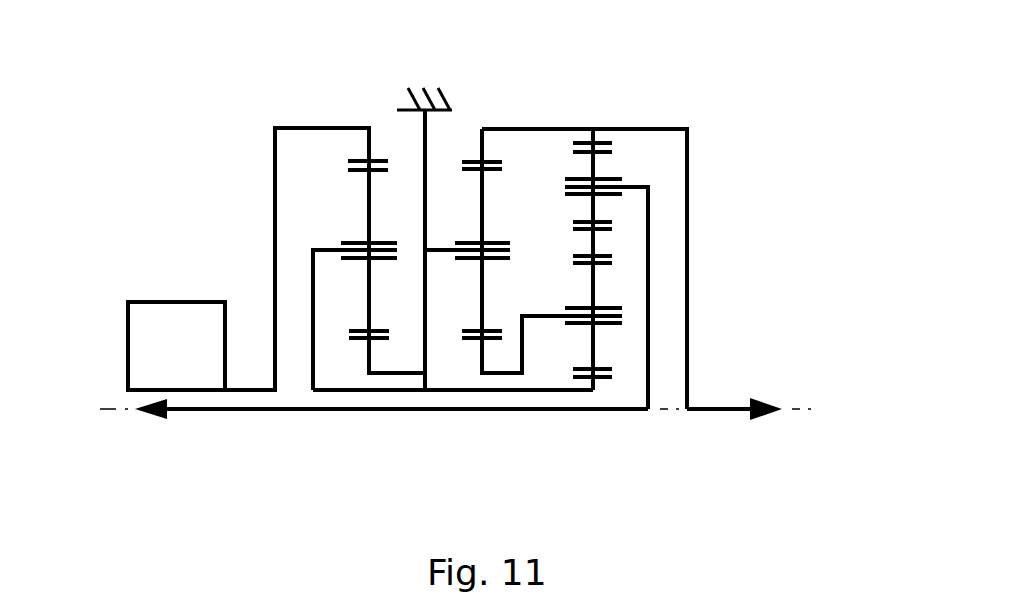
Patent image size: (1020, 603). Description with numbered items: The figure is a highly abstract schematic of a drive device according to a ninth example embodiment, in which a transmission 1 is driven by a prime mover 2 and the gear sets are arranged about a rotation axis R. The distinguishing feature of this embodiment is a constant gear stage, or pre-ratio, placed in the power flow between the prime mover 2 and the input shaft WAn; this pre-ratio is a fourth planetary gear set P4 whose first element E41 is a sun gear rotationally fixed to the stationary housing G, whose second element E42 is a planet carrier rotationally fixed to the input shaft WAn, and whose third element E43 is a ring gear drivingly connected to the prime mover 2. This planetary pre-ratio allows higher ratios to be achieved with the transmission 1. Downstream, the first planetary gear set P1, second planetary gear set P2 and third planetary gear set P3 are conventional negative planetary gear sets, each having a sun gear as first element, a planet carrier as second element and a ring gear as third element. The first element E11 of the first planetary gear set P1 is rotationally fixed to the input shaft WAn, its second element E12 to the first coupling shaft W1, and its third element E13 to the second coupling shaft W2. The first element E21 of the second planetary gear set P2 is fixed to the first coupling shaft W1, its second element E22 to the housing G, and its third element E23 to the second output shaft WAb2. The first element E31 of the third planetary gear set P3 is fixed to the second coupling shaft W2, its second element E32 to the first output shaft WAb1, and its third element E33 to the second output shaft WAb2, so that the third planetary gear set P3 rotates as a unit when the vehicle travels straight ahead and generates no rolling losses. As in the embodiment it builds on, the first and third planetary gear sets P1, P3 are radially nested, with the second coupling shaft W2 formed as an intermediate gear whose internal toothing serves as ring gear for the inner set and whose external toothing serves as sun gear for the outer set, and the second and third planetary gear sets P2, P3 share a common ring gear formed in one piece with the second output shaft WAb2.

The transmission 1 is at (127, 91).
The prime mover 2 is at (148, 308).
The housing G is at (400, 97).
The rotation axis R is at (800, 412).
The first planetary gear set P1 is at (607, 421).
The second planetary gear set P2 is at (476, 422).
The third planetary gear set P3 is at (634, 103).
The fourth planetary gear set P4 is at (347, 110).
The first coupling shaft W1 is at (545, 318).
The second coupling shaft W2 is at (593, 245).
The input shaft WAn is at (329, 392).
The first output shaft WAb1 is at (198, 412).
The second output shaft WAb2 is at (715, 409).
The first element of the first planetary gear set E11 is at (593, 392).
The second element of the first planetary gear set E12 is at (622, 316).
The third element of the first planetary gear set E13 is at (612, 256).
The first element of the second planetary gear set E21 is at (487, 345).
The second element of the second planetary gear set E22 is at (437, 251).
The third element of the second planetary gear set E23 is at (490, 162).
The first element of the third planetary gear set E31 is at (612, 229).
The second element of the third planetary gear set E32 is at (622, 187).
The third element of the third planetary gear set E33 is at (586, 143).
The first element of the fourth planetary gear set E41 is at (371, 345).
The second element of the fourth planetary gear set E42 is at (323, 247).
The third element of the fourth planetary gear set E43 is at (367, 143).